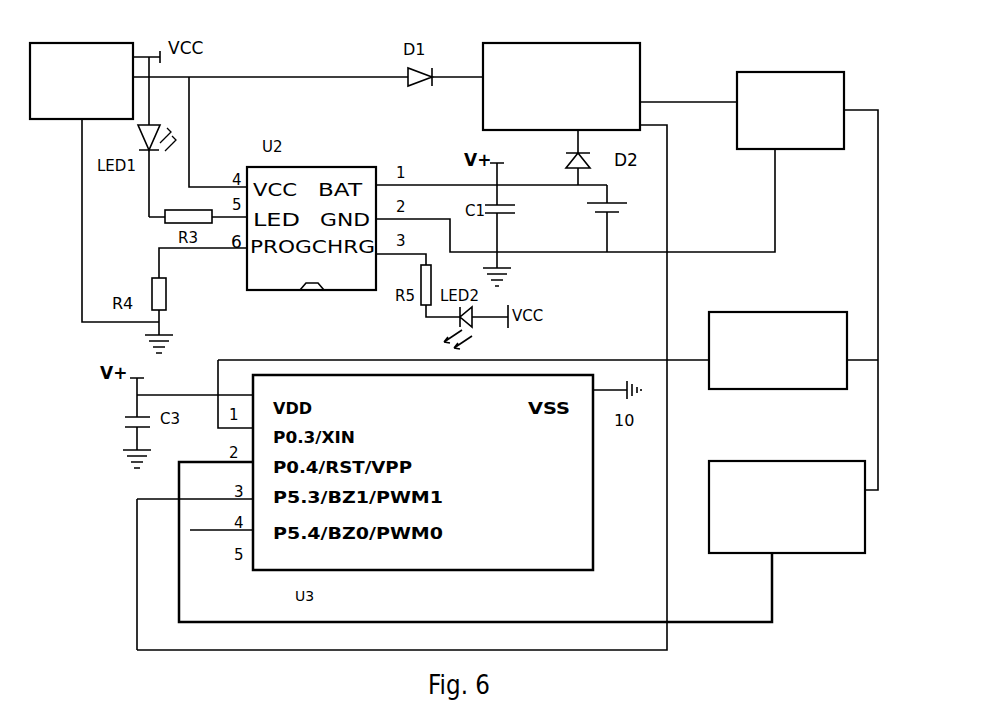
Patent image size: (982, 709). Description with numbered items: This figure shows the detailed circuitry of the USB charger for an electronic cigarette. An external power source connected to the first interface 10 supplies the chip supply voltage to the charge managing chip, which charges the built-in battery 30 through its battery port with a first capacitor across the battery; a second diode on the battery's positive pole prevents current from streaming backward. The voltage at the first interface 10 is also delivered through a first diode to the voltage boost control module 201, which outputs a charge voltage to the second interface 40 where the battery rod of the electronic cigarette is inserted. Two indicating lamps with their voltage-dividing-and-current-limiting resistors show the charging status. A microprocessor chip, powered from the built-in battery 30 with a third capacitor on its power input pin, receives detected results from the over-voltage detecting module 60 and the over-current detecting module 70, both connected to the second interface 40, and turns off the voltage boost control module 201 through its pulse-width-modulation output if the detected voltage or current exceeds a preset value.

The first interface 10 is at (81, 81).
The voltage boost control module 201 is at (561, 86).
The second interface 40 is at (790, 110).
The built-in battery 30 is at (614, 218).
The over-voltage detecting module 60 is at (778, 351).
The over-current detecting module 70 is at (787, 507).